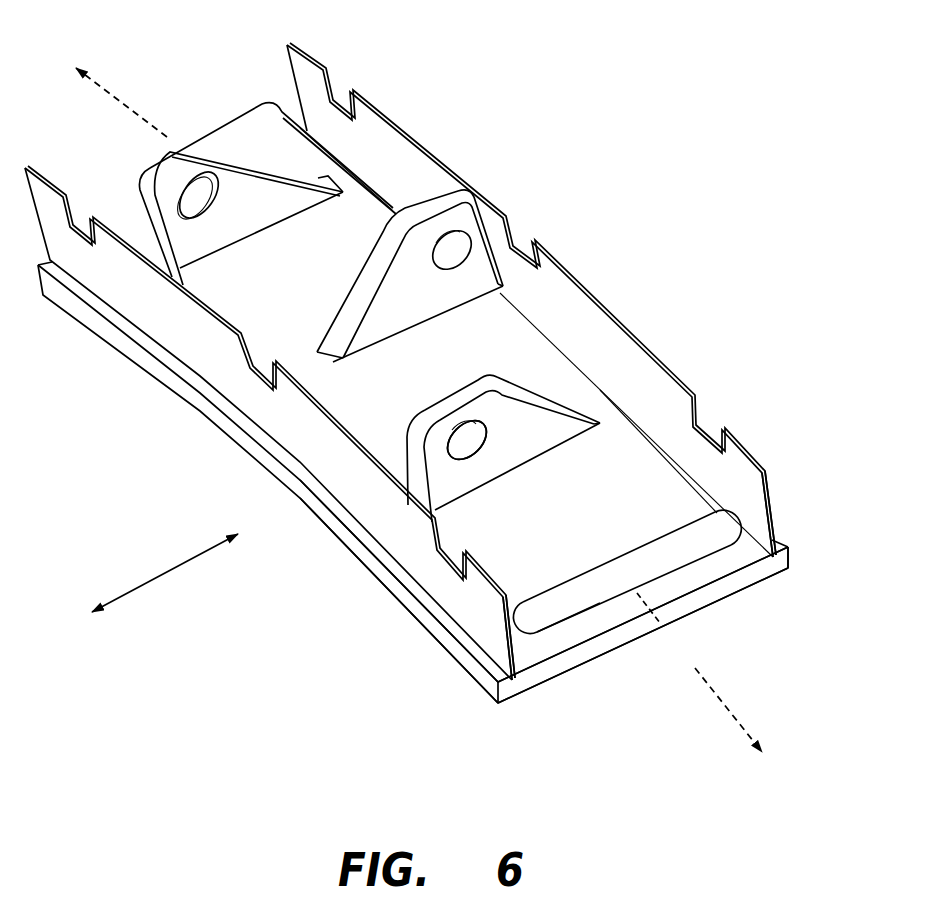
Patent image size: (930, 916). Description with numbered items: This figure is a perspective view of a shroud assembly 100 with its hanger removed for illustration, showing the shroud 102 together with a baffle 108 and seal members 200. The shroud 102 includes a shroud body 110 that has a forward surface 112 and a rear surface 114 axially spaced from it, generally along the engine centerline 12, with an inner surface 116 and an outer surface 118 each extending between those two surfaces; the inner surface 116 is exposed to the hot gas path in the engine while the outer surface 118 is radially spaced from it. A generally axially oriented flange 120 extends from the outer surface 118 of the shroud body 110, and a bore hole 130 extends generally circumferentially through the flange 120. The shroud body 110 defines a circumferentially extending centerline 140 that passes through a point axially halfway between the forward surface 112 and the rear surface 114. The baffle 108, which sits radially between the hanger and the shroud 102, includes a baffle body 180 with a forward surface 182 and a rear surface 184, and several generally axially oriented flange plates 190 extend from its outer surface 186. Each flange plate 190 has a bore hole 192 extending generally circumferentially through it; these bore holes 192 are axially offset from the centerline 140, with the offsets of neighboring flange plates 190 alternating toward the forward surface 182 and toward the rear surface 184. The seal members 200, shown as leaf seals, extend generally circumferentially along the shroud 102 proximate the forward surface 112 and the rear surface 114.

The shroud assembly 100 is at (554, 101).
The shroud 102 is at (620, 656).
The baffle 108 is at (555, 636).
The shroud body 110 is at (664, 626).
The forward surface 112 is at (458, 643).
The rear surface 114 is at (796, 552).
The inner surface 116 is at (700, 595).
The outer surface 118 is at (715, 568).
The flange 120 is at (247, 134).
The bore hole 130 is at (444, 449).
The circumferentially extending centerline 140 is at (122, 97).
The baffle body 180 is at (667, 550).
The forward surface 182 is at (516, 618).
The rear surface 184 is at (772, 502).
The outer surface 186 is at (620, 467).
The flange plate 190 is at (452, 280).
The bore hole 192 is at (470, 270).
The seal member 200 is at (742, 440).
The centerline 12 is at (158, 578).